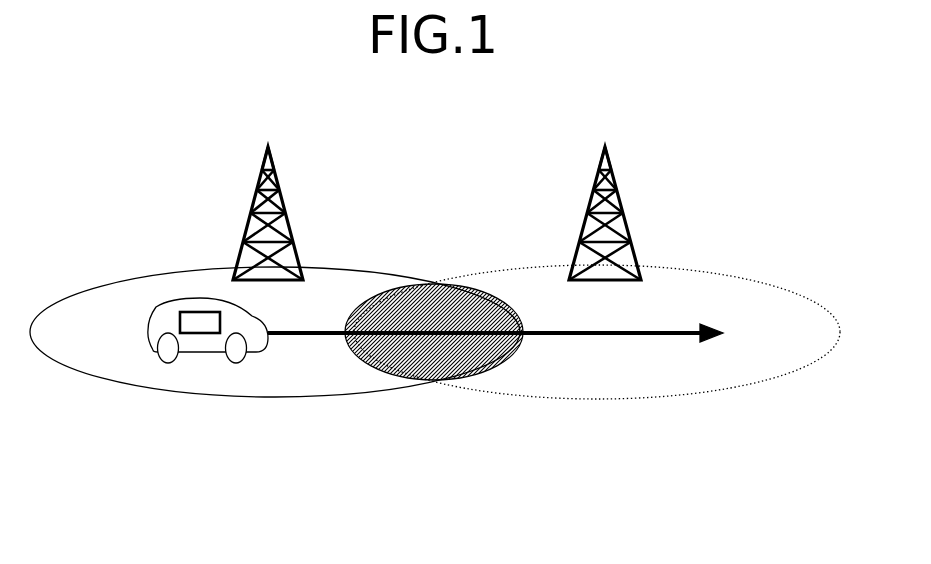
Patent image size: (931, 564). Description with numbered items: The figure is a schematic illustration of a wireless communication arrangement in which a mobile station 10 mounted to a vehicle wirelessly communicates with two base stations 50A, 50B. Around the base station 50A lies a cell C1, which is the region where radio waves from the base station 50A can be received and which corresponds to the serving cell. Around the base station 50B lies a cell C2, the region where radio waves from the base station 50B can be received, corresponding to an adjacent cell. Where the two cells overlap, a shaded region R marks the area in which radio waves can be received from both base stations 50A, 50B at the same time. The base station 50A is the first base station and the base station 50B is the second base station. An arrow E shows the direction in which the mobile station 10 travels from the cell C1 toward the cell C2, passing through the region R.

The base station 50A is at (268, 147).
The base station 50B is at (605, 147).
The mobile station 10 is at (207, 334).
The shaded region R is at (450, 300).
The cell C1 is at (108, 284).
The cell C2 is at (735, 277).
The arrow E is at (590, 335).